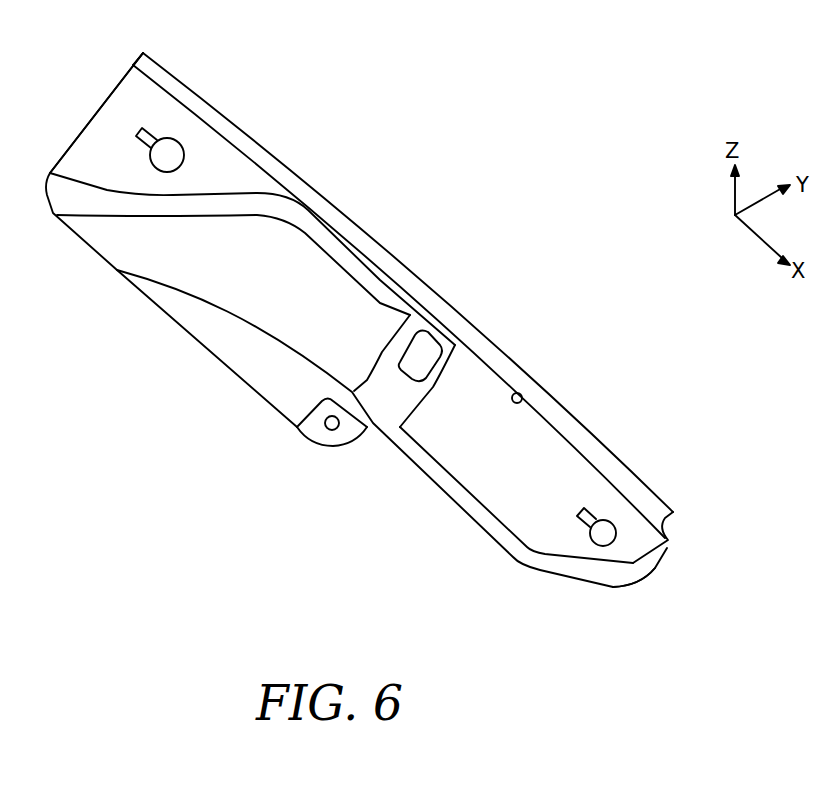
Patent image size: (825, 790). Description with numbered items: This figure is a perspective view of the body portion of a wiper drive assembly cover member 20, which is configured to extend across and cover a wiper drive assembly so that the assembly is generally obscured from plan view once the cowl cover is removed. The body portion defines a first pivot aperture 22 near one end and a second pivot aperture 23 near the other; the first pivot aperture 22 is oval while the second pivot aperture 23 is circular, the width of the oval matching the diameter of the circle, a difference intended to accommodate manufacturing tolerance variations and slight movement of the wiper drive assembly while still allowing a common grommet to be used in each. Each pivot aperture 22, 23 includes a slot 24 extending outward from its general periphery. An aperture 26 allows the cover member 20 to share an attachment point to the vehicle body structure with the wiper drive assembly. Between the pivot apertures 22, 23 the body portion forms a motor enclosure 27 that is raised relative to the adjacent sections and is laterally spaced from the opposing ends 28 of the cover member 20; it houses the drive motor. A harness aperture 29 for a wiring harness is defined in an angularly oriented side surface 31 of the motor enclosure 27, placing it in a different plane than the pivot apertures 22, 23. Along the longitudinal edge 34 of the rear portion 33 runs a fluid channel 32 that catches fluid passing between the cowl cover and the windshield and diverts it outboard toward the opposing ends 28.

The wiper drive assembly cover member 20 is at (681, 102).
The first pivot aperture 22 is at (170, 157).
The second pivot aperture 23 is at (593, 546).
The slot 24 is at (150, 135).
The aperture 26 is at (340, 430).
The motor enclosure 27 is at (323, 290).
The opposing ends 28 is at (93, 117).
The harness aperture 29 is at (418, 350).
The side surface 31 is at (377, 396).
The fluid channel 32 is at (558, 421).
The rear portion 33 is at (521, 395).
The longitudinal edge 34 is at (247, 152).